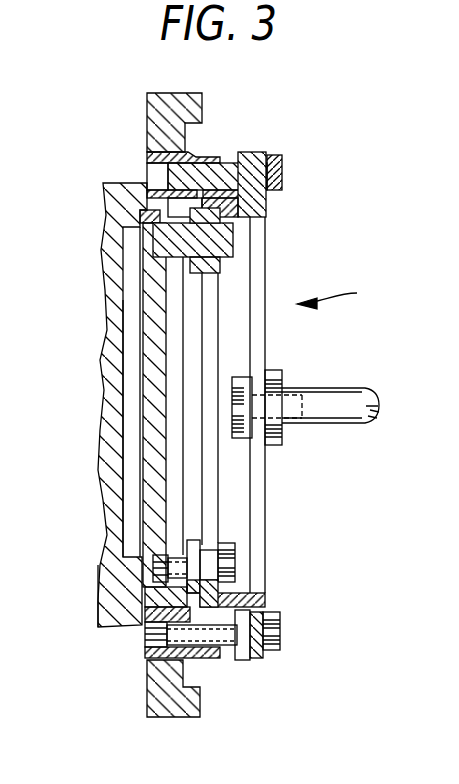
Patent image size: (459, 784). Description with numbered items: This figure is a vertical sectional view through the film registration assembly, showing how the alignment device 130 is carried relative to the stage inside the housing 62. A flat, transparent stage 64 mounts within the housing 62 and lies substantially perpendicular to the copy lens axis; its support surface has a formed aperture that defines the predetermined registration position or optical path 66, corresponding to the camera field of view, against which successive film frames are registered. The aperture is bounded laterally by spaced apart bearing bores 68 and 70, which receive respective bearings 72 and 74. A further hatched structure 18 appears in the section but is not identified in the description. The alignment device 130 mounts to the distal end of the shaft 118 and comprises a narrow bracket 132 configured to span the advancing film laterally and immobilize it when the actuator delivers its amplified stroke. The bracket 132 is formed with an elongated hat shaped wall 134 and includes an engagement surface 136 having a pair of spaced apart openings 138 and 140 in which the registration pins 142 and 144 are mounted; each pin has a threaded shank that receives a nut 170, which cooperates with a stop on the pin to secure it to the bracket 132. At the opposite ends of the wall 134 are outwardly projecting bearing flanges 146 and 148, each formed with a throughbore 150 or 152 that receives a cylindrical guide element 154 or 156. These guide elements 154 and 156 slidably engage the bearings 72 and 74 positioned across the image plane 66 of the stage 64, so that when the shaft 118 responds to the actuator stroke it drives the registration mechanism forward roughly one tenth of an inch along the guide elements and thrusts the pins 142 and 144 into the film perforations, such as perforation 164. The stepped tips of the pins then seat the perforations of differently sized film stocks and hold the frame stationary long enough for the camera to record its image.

The housing 18 is at (115, 382).
The housing 62 is at (123, 226).
The flat stage 64 is at (123, 427).
The optical path 66 is at (152, 283).
The bearing bore 68 is at (147, 655).
The bearing bore 70 is at (148, 155).
The bearing 72 is at (145, 622).
The bearing 74 is at (148, 168).
The shaft 118 is at (326, 390).
The alignment device 130 is at (346, 296).
The bracket 132 is at (265, 210).
The hat shaped wall 134 is at (250, 338).
The engagement surface 136 is at (197, 466).
The opening 138 is at (210, 537).
The opening 140 is at (200, 280).
The registration pin 142 is at (153, 575).
The registration pin 144 is at (150, 232).
The bearing flange 146 is at (263, 600).
The bearing flange 148 is at (255, 152).
The throughbore 150 is at (258, 655).
The throughbore 152 is at (282, 168).
The cylindrical guide element 154 is at (223, 653).
The cylindrical guide element 156 is at (220, 160).
The film perforation 164 is at (100, 548).
The nut 170 is at (232, 548).